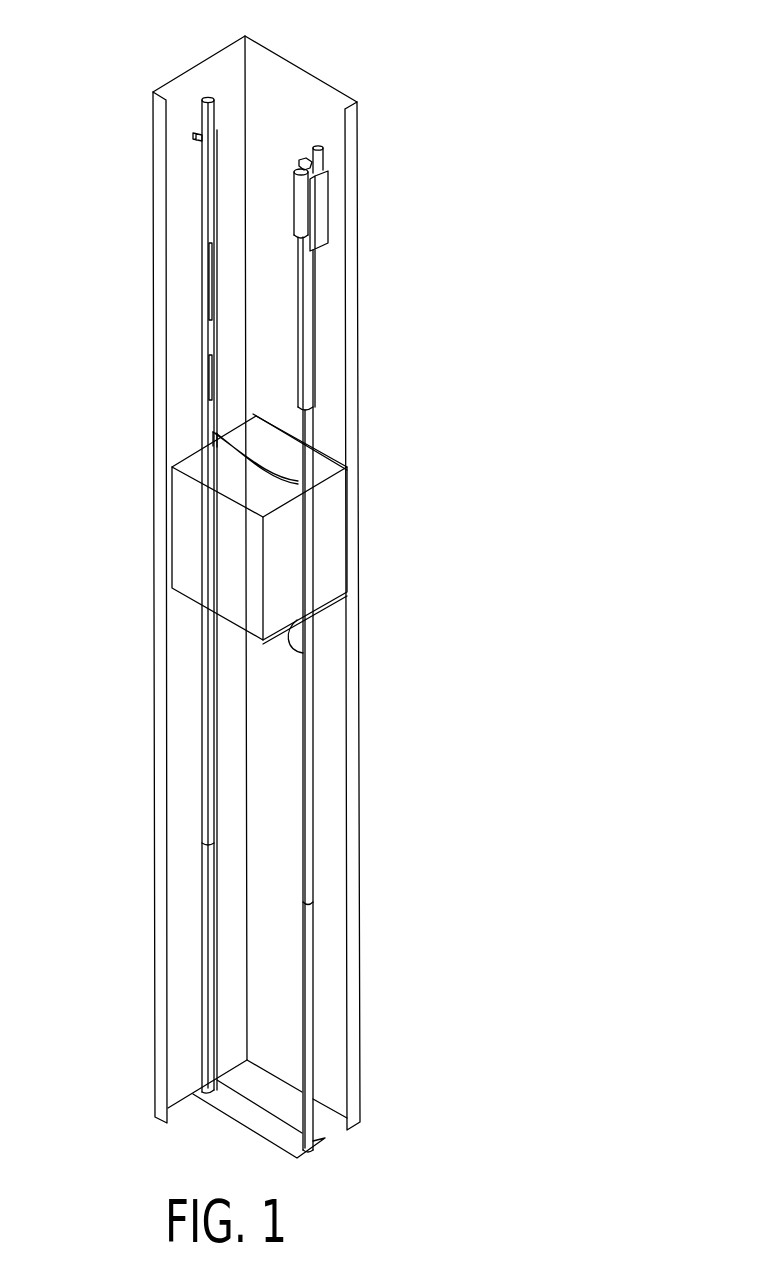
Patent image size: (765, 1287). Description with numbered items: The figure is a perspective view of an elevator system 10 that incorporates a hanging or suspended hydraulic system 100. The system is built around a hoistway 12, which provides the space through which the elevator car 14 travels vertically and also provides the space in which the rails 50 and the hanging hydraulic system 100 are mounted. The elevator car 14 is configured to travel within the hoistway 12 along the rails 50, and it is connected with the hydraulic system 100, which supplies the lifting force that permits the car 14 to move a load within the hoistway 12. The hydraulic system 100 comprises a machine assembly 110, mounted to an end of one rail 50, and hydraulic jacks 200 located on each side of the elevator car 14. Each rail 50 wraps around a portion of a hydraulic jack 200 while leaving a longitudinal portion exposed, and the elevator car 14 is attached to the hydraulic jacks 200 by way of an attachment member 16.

The elevator system 10 is at (327, 590).
The hoistway 12 is at (291, 98).
The elevator car 14 is at (203, 525).
The attachment member 16 is at (300, 478).
The rail 50 is at (205, 178).
The hanging hydraulic system 100 is at (300, 133).
The machine assembly 110 is at (333, 193).
The hydraulic jack 200 is at (210, 393).